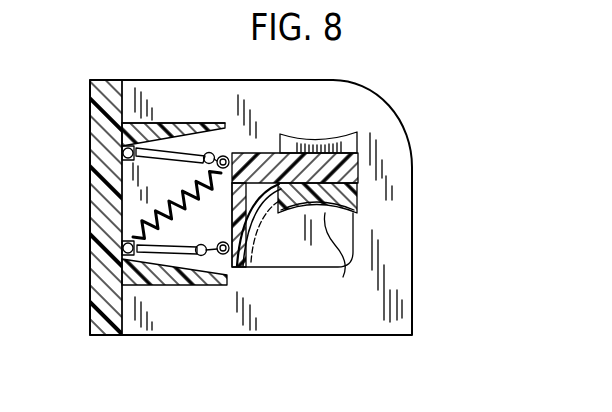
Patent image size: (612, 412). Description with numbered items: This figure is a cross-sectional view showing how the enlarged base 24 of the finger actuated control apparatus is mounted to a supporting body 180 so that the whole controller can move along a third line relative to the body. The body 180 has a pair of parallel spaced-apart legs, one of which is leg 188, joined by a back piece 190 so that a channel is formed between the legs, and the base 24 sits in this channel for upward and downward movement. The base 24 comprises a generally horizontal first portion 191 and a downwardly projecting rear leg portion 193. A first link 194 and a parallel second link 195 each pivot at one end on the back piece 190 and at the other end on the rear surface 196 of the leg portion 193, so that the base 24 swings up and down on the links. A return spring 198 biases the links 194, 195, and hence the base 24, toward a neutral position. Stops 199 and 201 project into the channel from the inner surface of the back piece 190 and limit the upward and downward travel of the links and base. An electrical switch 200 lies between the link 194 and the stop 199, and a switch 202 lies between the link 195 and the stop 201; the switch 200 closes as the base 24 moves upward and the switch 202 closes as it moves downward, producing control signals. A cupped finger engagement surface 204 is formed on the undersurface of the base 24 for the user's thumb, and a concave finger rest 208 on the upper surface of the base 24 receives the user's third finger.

The base 24 is at (357, 170).
The body 180 is at (92, 337).
The leg 188 is at (160, 92).
The back piece 190 is at (98, 107).
The first portion 191 is at (360, 196).
The rear leg portion 193 is at (258, 238).
The first link 194 is at (136, 165).
The second link 195 is at (135, 258).
The rear surface 196 is at (229, 214).
The return spring 198 is at (143, 215).
The stop 199 is at (198, 128).
The electrical switch 200 is at (222, 142).
The stop 201 is at (184, 280).
The switch 202 is at (224, 256).
The finger engagement surface 204 is at (343, 256).
The finger rest 208 is at (338, 142).